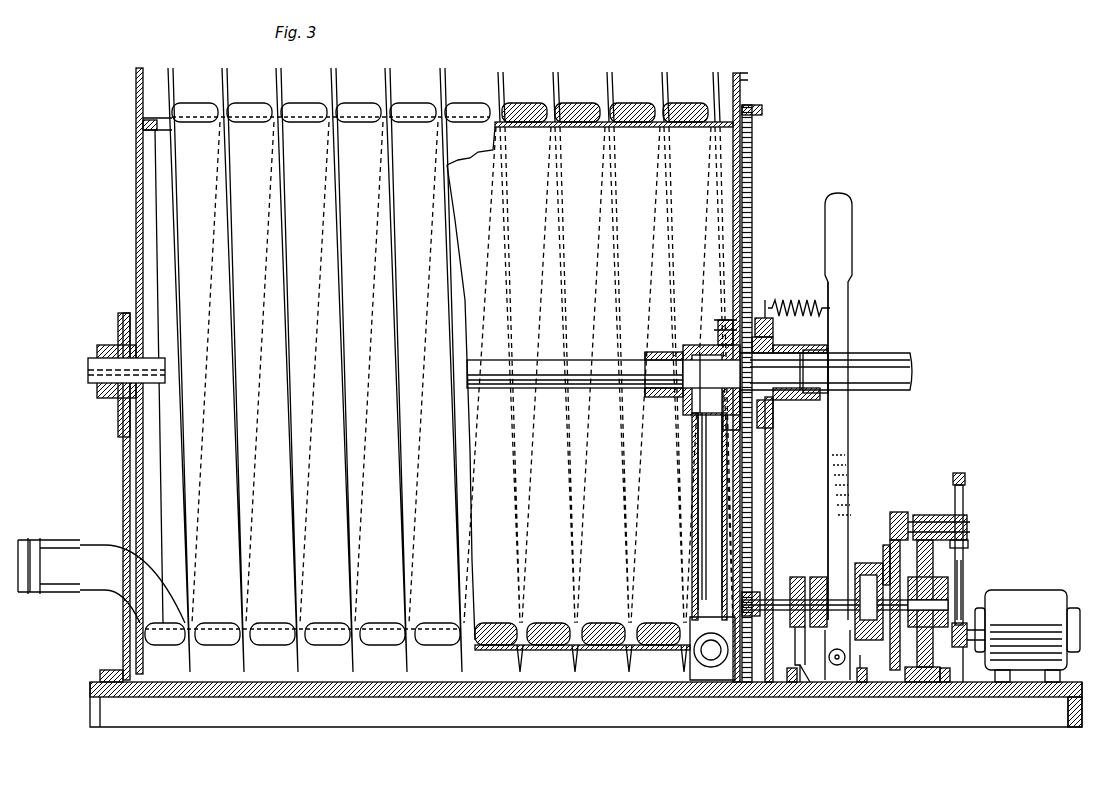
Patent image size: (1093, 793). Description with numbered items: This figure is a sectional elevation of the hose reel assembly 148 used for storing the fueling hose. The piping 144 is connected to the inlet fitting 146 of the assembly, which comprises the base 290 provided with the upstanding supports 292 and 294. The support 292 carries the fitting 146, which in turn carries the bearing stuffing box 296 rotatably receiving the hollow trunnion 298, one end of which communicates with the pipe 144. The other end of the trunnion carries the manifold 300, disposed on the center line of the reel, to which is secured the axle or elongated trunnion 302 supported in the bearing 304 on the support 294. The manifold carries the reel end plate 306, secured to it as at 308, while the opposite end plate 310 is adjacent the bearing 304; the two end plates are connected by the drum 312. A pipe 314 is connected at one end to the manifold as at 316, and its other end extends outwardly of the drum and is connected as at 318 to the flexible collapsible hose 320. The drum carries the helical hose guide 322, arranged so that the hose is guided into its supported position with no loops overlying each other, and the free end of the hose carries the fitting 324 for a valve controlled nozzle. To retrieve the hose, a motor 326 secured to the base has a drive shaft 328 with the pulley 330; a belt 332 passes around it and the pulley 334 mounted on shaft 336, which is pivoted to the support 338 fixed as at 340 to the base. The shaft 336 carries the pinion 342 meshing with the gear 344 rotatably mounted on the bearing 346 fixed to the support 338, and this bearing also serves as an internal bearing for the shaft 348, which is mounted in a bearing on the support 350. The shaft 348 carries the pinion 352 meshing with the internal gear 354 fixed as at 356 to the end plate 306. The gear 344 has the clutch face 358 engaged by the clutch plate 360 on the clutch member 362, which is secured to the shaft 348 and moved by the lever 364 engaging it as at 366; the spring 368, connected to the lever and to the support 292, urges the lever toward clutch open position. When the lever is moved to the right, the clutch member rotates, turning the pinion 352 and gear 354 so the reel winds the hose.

The piping 144 is at (888, 358).
The inlet fitting 146 is at (822, 411).
The hose reel assembly 148 is at (741, 76).
The base 290 is at (1070, 699).
The upstanding support 292 is at (728, 492).
The upstanding support 294 is at (125, 486).
The bearing stuffing box 296 is at (766, 412).
The hollow trunnion 298 is at (812, 345).
The manifold 300 is at (706, 345).
The axle or elongated trunnion 302 is at (562, 388).
The bearing 304 is at (110, 345).
The reel end plate 306 is at (741, 94).
The securing point 308 is at (726, 320).
The end plate 310 is at (136, 186).
The drum 312 is at (625, 128).
The pipe 314 is at (704, 465).
The connection 316 is at (690, 424).
The connection 318 is at (650, 648).
The flexible collapsible hose 320 is at (548, 642).
The helical hose guide 322 is at (445, 74).
The fitting 324 is at (55, 546).
The motor 326 is at (1045, 593).
The drive shaft 328 is at (965, 650).
The pulley 330 is at (968, 616).
The belt 332 is at (962, 592).
The pulley 334 is at (966, 495).
The shaft 336 is at (968, 526).
The support 338 is at (932, 515).
The fixing point 340 is at (860, 660).
The pinion 342 is at (899, 512).
The gear 344 is at (964, 540).
The bearing 346 is at (925, 684).
The shaft 348 is at (765, 600).
The support 350 is at (797, 592).
The pinion 352 is at (745, 622).
The internal gear 354 is at (767, 520).
The fixing point 356 is at (753, 113).
The clutch face 358 is at (886, 545).
The clutch plate 360 is at (890, 560).
The clutch member 362 is at (858, 575).
The lever 364 is at (852, 433).
The engagement point 366 is at (798, 680).
The spring 368 is at (797, 304).